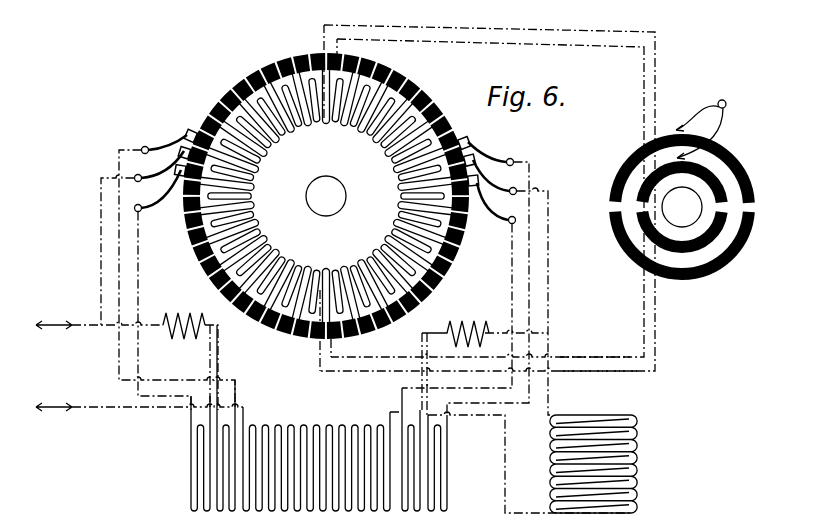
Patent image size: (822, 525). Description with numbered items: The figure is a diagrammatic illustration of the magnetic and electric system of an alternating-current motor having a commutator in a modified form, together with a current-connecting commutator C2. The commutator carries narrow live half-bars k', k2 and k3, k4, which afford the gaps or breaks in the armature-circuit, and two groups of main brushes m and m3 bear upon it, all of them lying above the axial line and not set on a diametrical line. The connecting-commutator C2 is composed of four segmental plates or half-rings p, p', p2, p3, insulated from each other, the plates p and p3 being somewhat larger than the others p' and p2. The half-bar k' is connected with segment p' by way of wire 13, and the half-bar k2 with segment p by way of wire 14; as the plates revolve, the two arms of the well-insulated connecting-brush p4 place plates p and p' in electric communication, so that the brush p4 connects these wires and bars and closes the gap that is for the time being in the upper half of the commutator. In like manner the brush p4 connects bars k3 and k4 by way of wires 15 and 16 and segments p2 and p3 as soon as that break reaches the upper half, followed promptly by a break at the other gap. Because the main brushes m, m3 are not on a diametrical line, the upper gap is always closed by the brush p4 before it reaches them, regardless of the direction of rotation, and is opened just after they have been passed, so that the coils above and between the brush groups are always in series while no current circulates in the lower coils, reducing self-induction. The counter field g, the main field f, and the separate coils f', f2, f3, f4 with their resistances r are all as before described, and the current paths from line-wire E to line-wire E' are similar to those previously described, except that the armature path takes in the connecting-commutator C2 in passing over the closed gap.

The narrow live half-bar k' is at (326, 175).
The narrow live half-bar k2 is at (340, 53).
The narrow live half-bar k3 is at (303, 330).
The narrow live half-bar k4 is at (333, 345).
The wire 13 is at (487, 191).
The wire 14 is at (487, 198).
The wire 15 is at (600, 383).
The wire 16 is at (595, 350).
The main brushes m is at (487, 180).
The main brushes m3 is at (166, 170).
The resistances r is at (355, 355).
The line-wire E is at (139, 400).
The line-wire E' is at (99, 333).
The separate coil f' is at (194, 453).
The separate coil f2 is at (226, 418).
The main field f is at (316, 459).
The separate coil f3 is at (410, 449).
The separate coil f4 is at (437, 463).
The counter field g is at (599, 464).
The connecting-commutator C2 is at (685, 200).
The segmental plate p is at (715, 139).
The segmental plate p' is at (701, 203).
The segmental plate p2 is at (682, 218).
The segmental plate p3 is at (682, 220).
The connecting-brush p4 is at (708, 109).